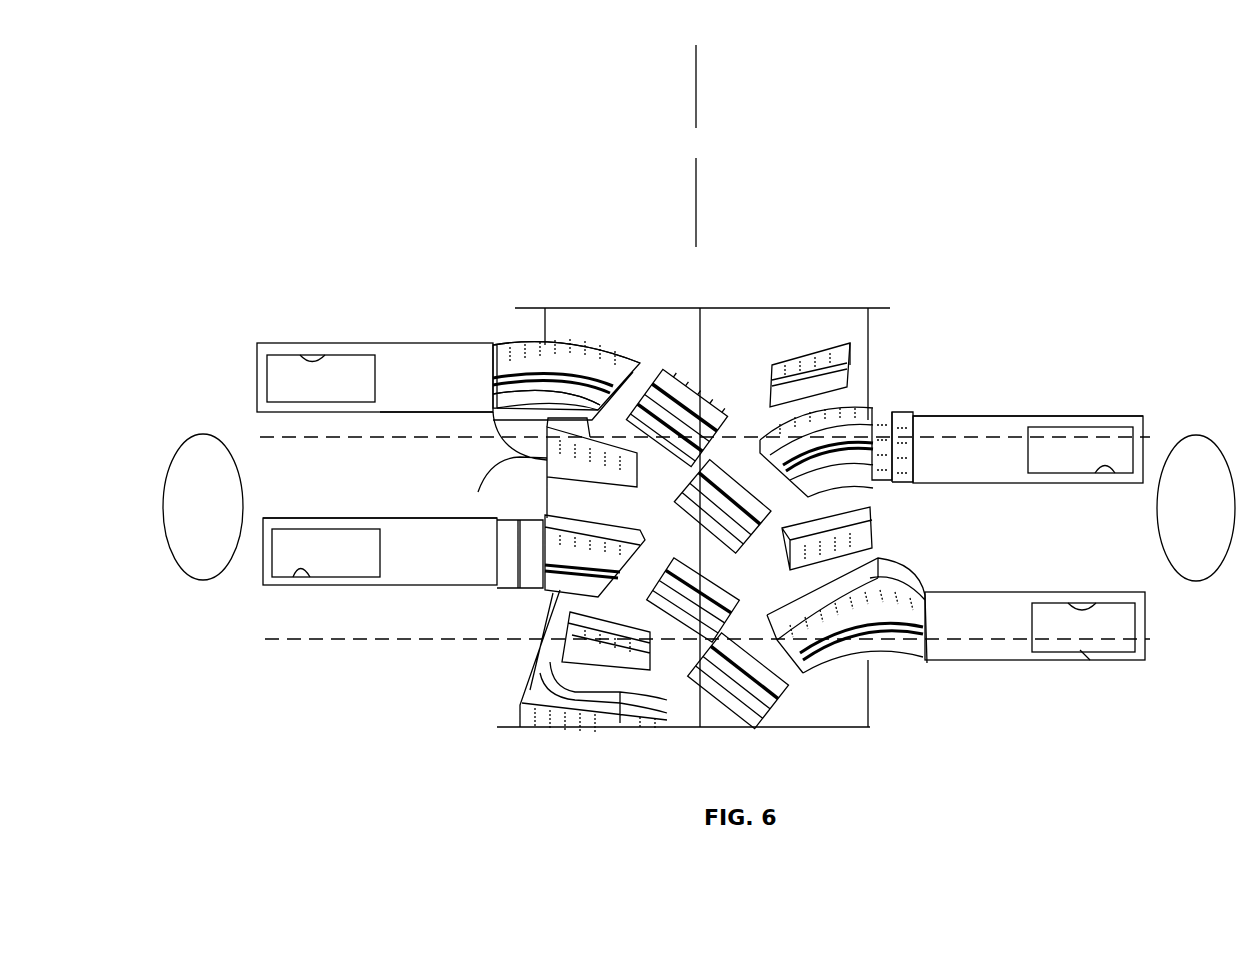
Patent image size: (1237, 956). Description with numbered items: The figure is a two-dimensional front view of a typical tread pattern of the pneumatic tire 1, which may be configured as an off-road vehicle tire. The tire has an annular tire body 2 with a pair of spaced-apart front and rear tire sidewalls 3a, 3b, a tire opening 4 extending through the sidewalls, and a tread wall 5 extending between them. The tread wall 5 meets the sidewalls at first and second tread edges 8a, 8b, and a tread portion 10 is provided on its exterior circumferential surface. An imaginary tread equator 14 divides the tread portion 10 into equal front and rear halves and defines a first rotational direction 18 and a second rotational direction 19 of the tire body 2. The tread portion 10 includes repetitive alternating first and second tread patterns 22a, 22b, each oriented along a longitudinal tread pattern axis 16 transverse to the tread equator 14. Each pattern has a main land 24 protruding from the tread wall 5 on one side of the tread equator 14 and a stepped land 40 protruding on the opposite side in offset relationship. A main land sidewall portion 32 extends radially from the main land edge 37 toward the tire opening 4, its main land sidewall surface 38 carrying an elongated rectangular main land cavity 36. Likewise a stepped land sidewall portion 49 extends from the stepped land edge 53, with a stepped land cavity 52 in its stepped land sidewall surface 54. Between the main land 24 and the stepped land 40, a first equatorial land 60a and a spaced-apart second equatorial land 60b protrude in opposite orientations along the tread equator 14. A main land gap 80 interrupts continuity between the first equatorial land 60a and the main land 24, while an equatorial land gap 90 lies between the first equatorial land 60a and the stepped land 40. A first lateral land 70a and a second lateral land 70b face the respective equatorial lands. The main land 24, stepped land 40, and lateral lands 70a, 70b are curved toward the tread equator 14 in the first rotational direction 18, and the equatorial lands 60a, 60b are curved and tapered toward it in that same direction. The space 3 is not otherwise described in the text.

The pneumatic tire 1 is at (293, 213).
The tire body 2 is at (470, 337).
The space 3 is at (691, 513).
The front tire sidewall 3a is at (545, 322).
The rear tire sidewall 3b is at (885, 345).
The tire opening 4 is at (205, 433).
The tread wall 5 is at (804, 371).
The first tread edge 8a is at (548, 343).
The second tread edge 8b is at (848, 345).
The tread portion 10 is at (323, 300).
The tread equator 14 is at (715, 345).
The longitudinal tread pattern axis 16 is at (345, 440).
The first rotational direction 18 is at (696, 197).
The second rotational direction 19 is at (696, 108).
The first tread pattern 22a is at (1052, 322).
The second tread pattern 22b is at (410, 650).
The main land 24 is at (600, 337).
The main land sidewall portion 32 is at (395, 410).
The main land cavity 36 is at (310, 356).
The main land edge 37 is at (493, 392).
The main land sidewall surface 38 is at (701, 501).
The stepped land 40 is at (858, 405).
The stepped land sidewall portion 49 is at (355, 590).
The stepped land cavity 52 is at (296, 575).
The stepped land edge 53 is at (920, 468).
The stepped land sidewall surface 54 is at (703, 500).
The first equatorial land 60a is at (713, 410).
The second equatorial land 60b is at (735, 548).
The first lateral land 70a is at (790, 345).
The second lateral land 70b is at (520, 462).
The main land gap 80 is at (660, 380).
The equatorial land gap 90 is at (672, 760).